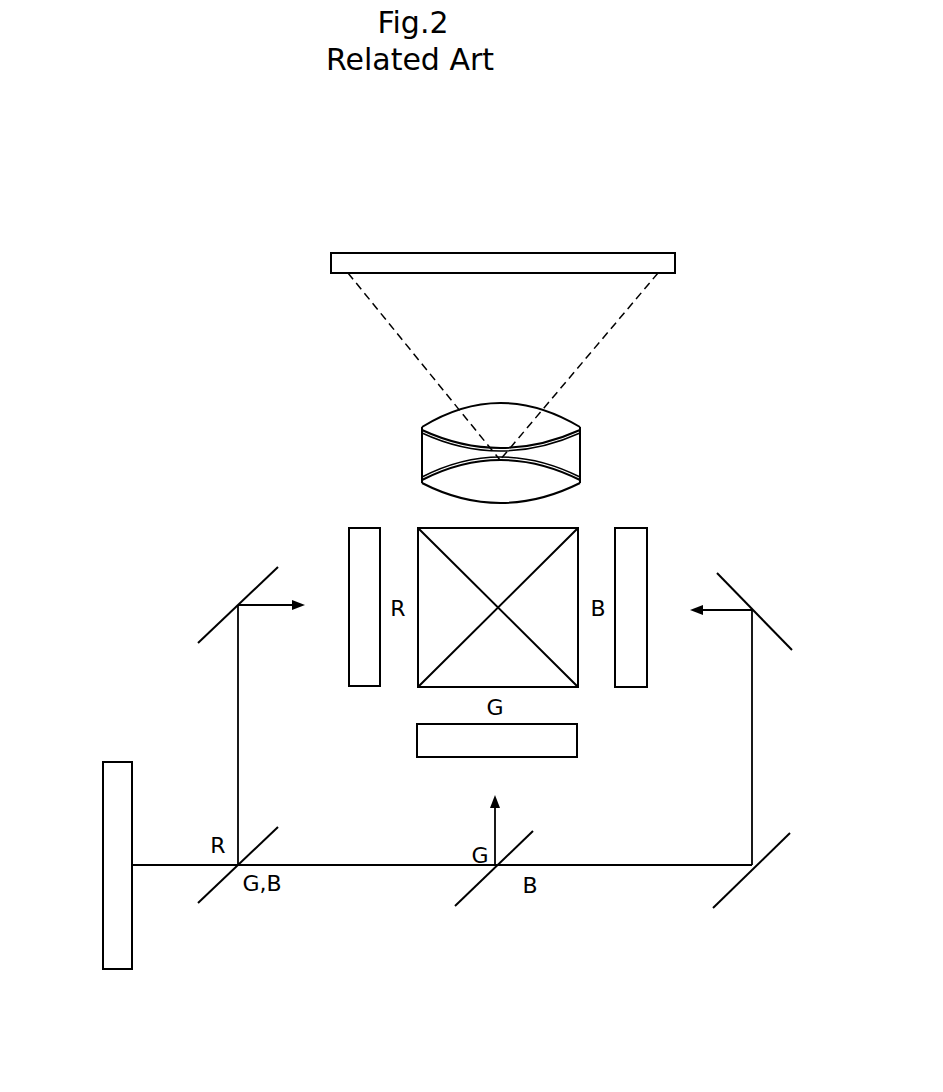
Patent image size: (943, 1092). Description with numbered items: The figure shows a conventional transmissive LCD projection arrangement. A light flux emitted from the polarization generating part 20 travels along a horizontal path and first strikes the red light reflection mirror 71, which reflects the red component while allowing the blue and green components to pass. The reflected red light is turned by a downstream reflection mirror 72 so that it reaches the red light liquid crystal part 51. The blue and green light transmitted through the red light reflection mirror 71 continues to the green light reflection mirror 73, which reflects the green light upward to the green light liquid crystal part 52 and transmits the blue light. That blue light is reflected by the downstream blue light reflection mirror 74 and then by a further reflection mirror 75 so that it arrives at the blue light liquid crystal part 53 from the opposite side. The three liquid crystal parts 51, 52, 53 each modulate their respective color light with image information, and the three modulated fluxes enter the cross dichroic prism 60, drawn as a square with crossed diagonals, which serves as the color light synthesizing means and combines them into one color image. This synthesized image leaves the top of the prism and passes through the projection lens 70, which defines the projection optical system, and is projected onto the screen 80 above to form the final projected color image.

The polarization generating part 20 is at (103, 862).
The red light liquid crystal part 51 is at (349, 545).
The green light liquid crystal part 52 is at (577, 738).
The blue light liquid crystal part 53 is at (647, 556).
The cross dichroic prism 60 is at (423, 665).
The projection lens 70 is at (598, 413).
The red light reflection mirror 71 is at (213, 893).
The reflection mirror 72 is at (232, 612).
The green light reflection mirror 73 is at (470, 893).
The blue light reflection mirror 74 is at (735, 893).
The reflection mirror 75 is at (770, 625).
The screen 80 is at (675, 263).